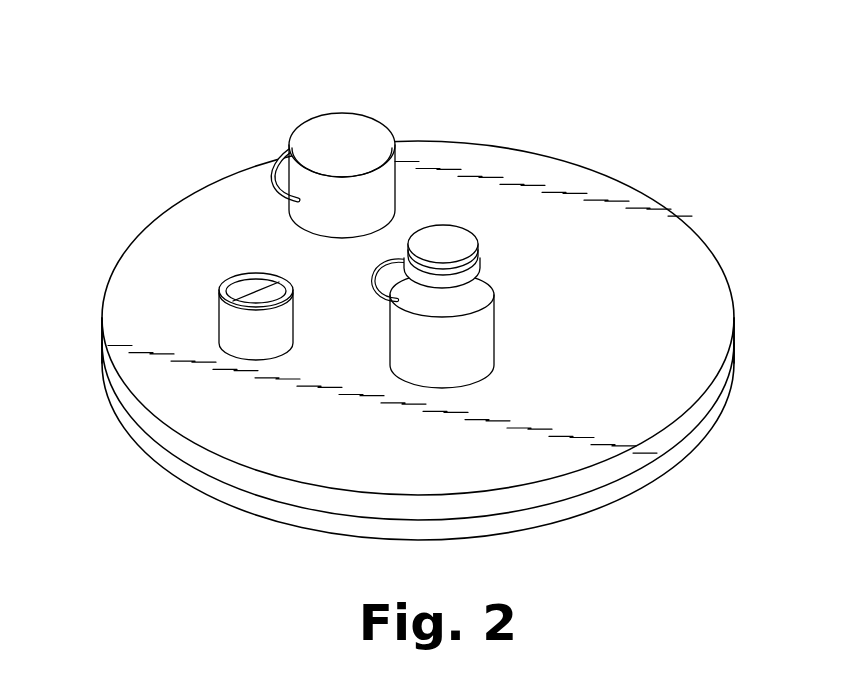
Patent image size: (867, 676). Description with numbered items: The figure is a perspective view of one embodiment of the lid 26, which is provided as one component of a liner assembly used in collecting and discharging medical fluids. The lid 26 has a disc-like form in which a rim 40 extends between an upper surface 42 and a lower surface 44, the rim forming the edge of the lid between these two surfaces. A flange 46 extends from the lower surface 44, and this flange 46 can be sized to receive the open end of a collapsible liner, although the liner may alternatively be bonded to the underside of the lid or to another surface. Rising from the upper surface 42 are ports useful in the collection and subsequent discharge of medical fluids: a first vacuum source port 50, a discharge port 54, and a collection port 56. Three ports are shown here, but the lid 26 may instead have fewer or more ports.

The lid 26 is at (209, 104).
The rim 40 is at (162, 428).
The upper surface 42 is at (160, 395).
The lower surface 44 is at (112, 396).
The flange 46 is at (184, 468).
The first vacuum source port 50 is at (236, 329).
The discharge port 54 is at (385, 190).
The collection port 56 is at (467, 348).